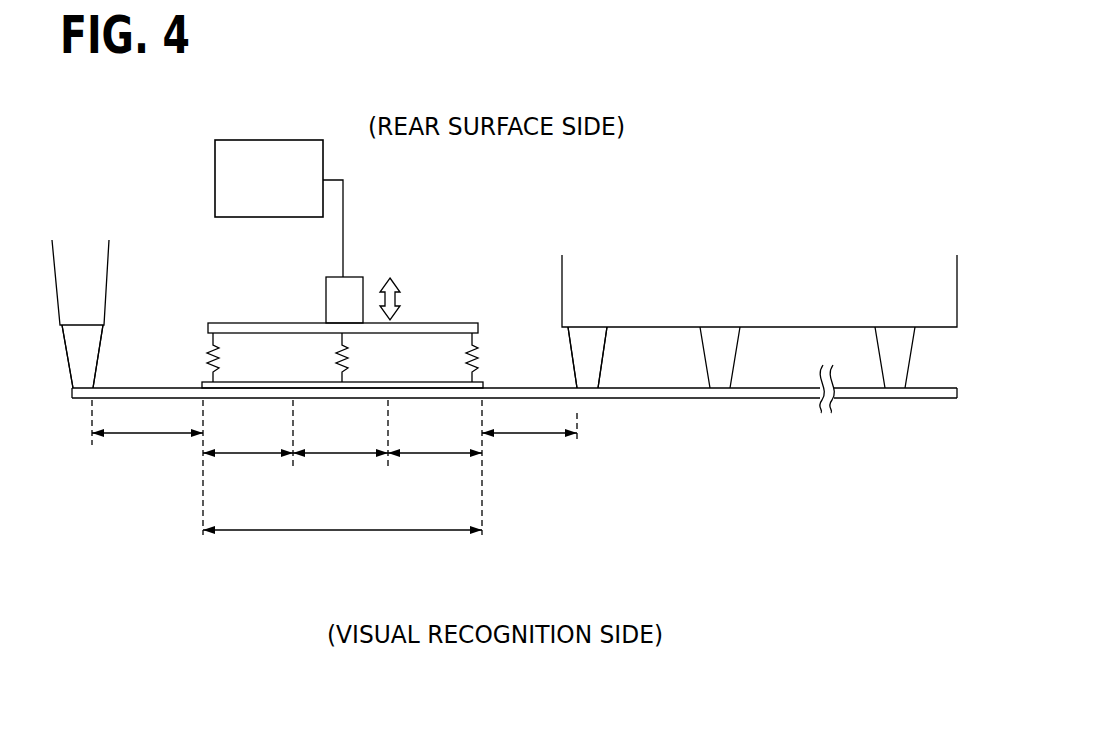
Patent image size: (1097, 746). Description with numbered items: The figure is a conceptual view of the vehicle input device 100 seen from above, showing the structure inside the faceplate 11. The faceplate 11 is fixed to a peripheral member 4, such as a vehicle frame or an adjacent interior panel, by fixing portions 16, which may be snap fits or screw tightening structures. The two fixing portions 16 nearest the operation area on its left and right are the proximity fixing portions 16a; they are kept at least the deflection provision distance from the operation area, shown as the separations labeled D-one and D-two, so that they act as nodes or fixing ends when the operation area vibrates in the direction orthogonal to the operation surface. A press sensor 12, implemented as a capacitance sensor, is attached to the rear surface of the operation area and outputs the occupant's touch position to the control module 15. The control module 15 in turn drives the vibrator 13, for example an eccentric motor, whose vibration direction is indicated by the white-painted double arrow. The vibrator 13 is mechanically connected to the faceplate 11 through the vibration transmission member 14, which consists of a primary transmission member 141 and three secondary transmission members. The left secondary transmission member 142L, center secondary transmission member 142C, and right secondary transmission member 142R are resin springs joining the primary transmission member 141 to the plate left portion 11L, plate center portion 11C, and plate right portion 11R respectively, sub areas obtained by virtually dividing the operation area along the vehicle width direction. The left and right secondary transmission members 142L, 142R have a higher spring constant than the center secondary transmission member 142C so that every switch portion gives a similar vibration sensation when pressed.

The vehicle input device 100 is at (132, 186).
The peripheral member 4 is at (88, 293).
The faceplate 11 is at (883, 398).
The plate left portion 11L is at (246, 403).
The plate center portion 11C is at (340, 403).
The plate right portion 11R is at (436, 403).
The press sensor 12 is at (257, 382).
The vibrator 13 is at (360, 277).
The vibration transmission member 14 is at (341, 315).
The primary transmission member 141 is at (430, 323).
The left secondary transmission member 142L is at (204, 357).
The center secondary transmission member 142C is at (326, 359).
The right secondary transmission member 142R is at (484, 355).
The control module 15 is at (215, 165).
The fixing portion 16 is at (733, 369).
The proximity fixing portion 16a is at (60, 368).